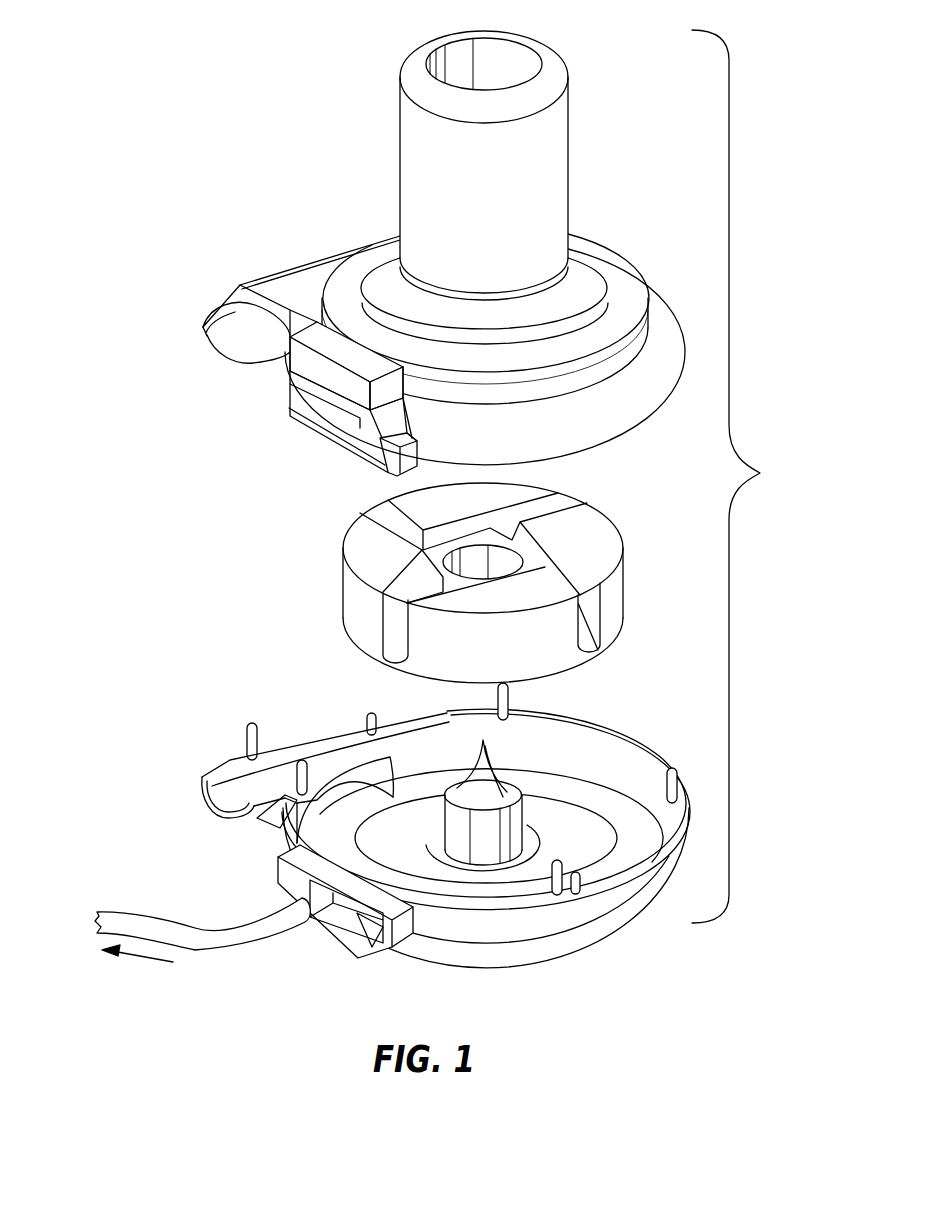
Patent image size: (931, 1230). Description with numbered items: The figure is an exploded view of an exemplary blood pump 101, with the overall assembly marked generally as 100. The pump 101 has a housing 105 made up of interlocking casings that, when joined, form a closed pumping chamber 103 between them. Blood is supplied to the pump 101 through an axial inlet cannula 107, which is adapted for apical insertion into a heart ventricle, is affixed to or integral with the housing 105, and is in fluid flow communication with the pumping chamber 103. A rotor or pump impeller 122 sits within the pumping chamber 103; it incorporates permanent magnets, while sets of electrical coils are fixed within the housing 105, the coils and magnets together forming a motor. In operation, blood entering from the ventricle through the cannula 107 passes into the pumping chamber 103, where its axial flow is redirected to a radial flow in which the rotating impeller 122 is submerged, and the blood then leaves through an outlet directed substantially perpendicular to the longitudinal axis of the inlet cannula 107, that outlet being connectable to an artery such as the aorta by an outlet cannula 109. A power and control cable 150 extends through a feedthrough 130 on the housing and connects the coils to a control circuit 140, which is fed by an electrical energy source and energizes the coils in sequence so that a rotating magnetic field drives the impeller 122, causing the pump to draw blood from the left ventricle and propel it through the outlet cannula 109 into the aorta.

The light curing device 100 is at (448, 520).
The blood pump 101 is at (438, 253).
The pumping chamber 103 is at (657, 327).
The housing 105 is at (448, 520).
The inlet cannula 107 is at (553, 147).
The outlet cannula 109 is at (250, 283).
The impeller 122 is at (375, 542).
The feedthrough 130 is at (308, 933).
The control circuit 140 is at (151, 977).
The power and control cable 150 is at (145, 913).